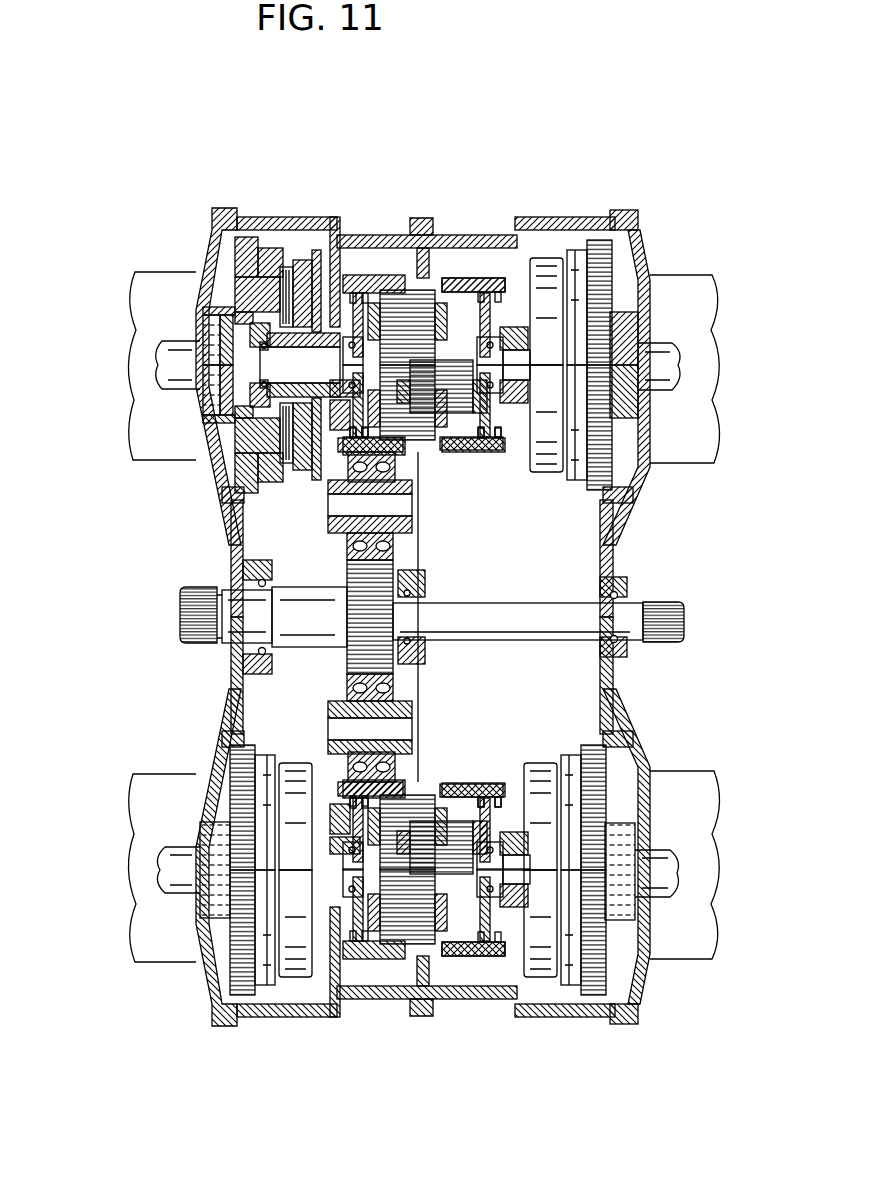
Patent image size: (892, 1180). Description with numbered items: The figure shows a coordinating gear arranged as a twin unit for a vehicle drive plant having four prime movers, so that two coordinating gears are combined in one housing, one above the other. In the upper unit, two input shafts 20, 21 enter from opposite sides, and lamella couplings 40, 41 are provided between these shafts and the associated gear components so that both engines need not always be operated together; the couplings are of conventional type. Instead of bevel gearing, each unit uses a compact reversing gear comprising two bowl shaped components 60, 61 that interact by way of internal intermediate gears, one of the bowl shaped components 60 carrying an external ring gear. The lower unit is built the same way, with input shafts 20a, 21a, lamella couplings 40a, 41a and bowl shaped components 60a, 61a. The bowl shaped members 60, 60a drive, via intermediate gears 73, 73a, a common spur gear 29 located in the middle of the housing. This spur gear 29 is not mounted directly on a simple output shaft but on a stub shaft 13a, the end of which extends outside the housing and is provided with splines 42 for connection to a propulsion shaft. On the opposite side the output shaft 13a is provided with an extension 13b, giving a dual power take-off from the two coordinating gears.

The shaft 20 is at (180, 358).
The shaft 21 is at (695, 360).
The lamella coupling 40 is at (293, 262).
The lamella coupling 41 is at (582, 275).
The bowl shaped component 60 is at (378, 278).
The bowl shaped component 61 is at (470, 280).
The intermediate gear 73 is at (412, 467).
The intermediate gear 73a is at (396, 684).
The spur gear 29 is at (378, 592).
The stub shaft 13a is at (312, 610).
The extension 13b is at (550, 615).
The splines 42 is at (185, 605).
The shaft 20a is at (175, 860).
The shaft 21a is at (668, 862).
The lamella coupling 40a is at (270, 980).
The lamella coupling 41a is at (573, 980).
The bowl shaped member 60a is at (378, 953).
The bowl shaped component 61a is at (472, 957).